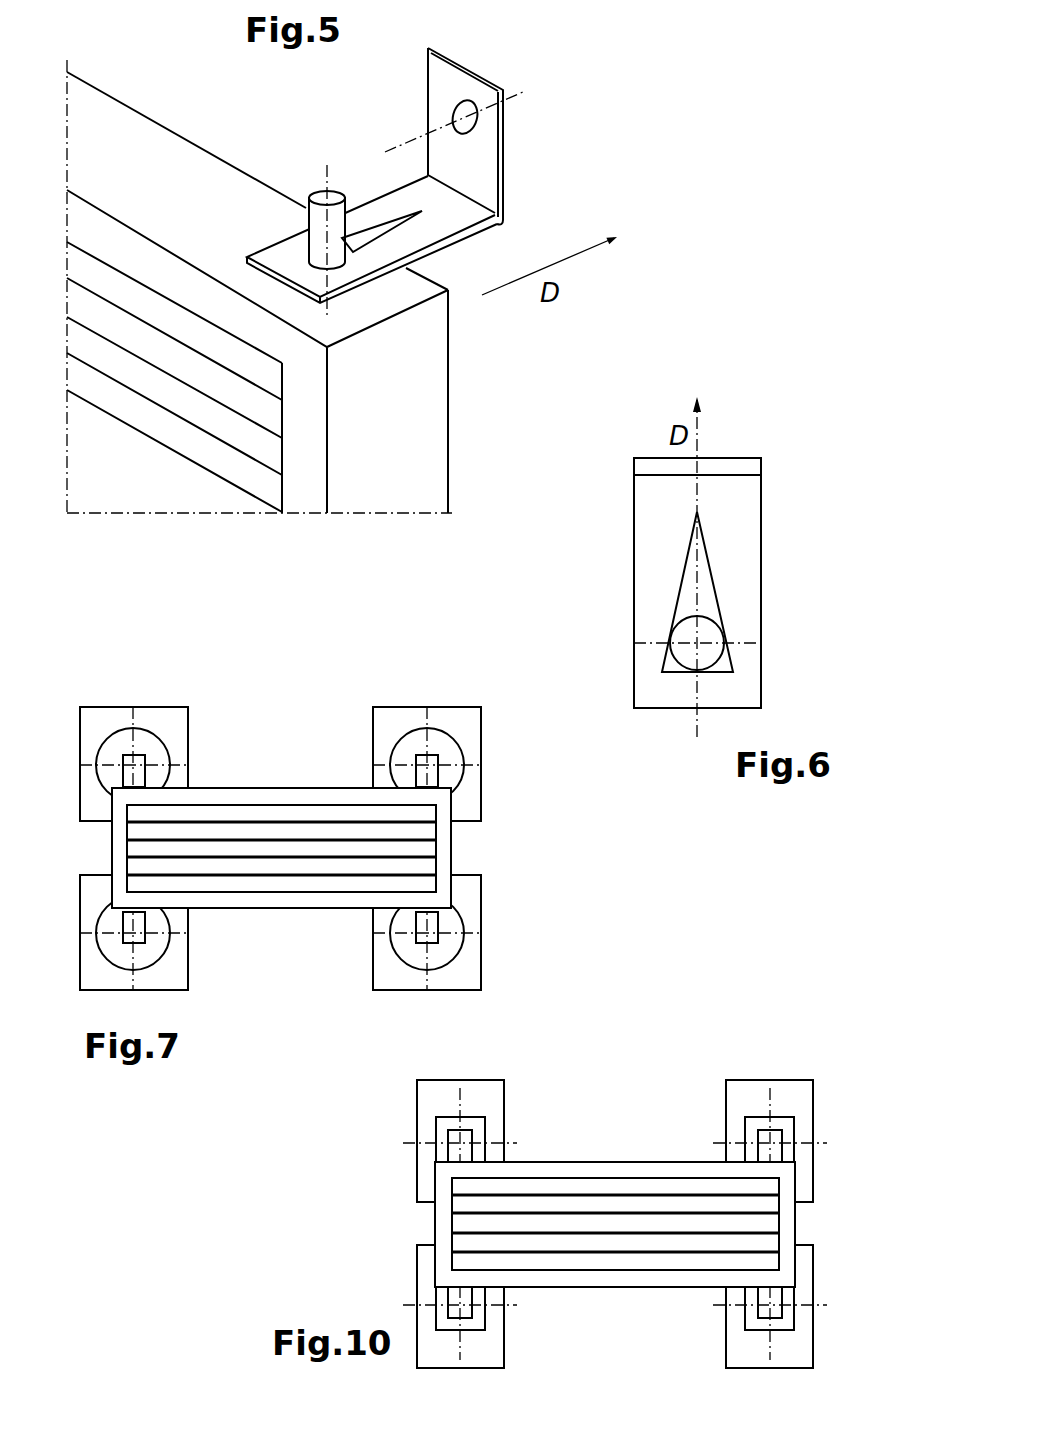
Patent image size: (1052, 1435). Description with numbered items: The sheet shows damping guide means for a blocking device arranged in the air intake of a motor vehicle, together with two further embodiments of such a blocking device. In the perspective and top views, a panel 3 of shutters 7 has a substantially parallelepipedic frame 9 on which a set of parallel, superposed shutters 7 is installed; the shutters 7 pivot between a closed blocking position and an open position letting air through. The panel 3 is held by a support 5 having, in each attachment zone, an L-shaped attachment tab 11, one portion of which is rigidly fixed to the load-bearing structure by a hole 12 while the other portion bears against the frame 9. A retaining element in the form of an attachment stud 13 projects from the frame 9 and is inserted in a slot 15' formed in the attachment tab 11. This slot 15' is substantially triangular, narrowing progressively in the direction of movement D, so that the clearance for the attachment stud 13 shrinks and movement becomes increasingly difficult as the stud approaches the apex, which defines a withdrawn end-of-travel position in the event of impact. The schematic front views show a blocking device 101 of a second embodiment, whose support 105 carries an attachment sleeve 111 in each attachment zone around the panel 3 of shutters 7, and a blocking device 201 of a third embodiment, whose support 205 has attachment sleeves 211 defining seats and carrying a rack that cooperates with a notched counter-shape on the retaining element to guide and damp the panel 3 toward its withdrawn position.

In FIG. 5, the panel of shutters 3 is at (131, 84).
In FIG. 7, the panel of shutters 3 is at (239, 836).
In FIG. 10, the panel of shutters 3 is at (572, 1215).
In FIG. 5, the support 5 is at (418, 171).
In FIG. 6, the support 5 is at (749, 553).
In FIG. 5, the shutters 7 is at (178, 402).
In FIG. 7, the shutters 7 is at (287, 813).
In FIG. 10, the shutters 7 is at (657, 1188).
In FIG. 5, the frame 9 is at (152, 137).
In FIG. 7, the frame 9 is at (117, 837).
In FIG. 10, the frame 9 is at (441, 1216).
In FIG. 5, the attachment tab 11 is at (487, 185).
In FIG. 6, the attachment tab 11 is at (748, 513).
In FIG. 5, the hole 12 is at (467, 130).
In FIG. 5, the attachment stud 13 is at (320, 197).
In FIG. 6, the attachment stud 13 is at (710, 655).
In FIG. 5, the slot 15' is at (373, 178).
In FIG. 6, the slot 15' is at (763, 592).
In FIG. 7, the blocking device 101 is at (288, 806).
In FIG. 7, the support 105 is at (288, 806).
In FIG. 7, the attachment sleeve 111 is at (163, 703).
In FIG. 10, the blocking device 201 is at (608, 1179).
In FIG. 10, the support 205 is at (580, 1179).
In FIG. 10, the attachment sleeve 211 is at (803, 1109).